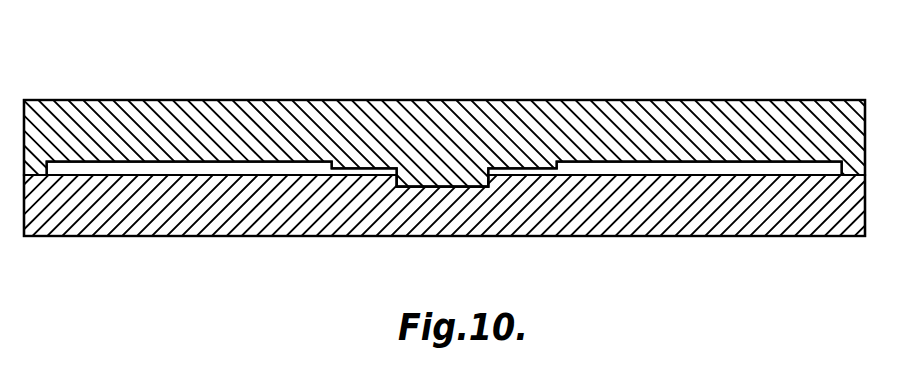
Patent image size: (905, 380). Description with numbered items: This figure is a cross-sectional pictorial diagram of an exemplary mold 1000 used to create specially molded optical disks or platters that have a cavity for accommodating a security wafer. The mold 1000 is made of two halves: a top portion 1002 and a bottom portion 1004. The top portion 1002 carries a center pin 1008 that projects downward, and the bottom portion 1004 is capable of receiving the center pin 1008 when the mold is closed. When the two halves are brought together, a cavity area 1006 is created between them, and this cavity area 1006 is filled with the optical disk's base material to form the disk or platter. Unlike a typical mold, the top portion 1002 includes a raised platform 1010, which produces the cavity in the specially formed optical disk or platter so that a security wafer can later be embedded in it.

The mold 1000 is at (352, 71).
The top portion 1002 is at (694, 100).
The bottom portion 1004 is at (688, 237).
The cavity area 1006 is at (213, 170).
The center pin 1008 is at (445, 187).
The raised platform 1010 is at (562, 181).